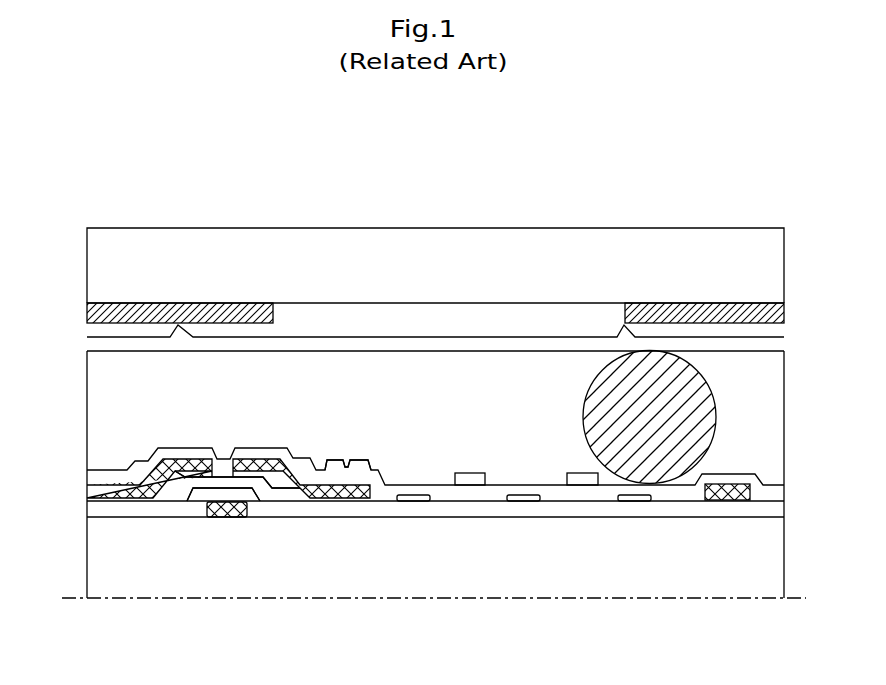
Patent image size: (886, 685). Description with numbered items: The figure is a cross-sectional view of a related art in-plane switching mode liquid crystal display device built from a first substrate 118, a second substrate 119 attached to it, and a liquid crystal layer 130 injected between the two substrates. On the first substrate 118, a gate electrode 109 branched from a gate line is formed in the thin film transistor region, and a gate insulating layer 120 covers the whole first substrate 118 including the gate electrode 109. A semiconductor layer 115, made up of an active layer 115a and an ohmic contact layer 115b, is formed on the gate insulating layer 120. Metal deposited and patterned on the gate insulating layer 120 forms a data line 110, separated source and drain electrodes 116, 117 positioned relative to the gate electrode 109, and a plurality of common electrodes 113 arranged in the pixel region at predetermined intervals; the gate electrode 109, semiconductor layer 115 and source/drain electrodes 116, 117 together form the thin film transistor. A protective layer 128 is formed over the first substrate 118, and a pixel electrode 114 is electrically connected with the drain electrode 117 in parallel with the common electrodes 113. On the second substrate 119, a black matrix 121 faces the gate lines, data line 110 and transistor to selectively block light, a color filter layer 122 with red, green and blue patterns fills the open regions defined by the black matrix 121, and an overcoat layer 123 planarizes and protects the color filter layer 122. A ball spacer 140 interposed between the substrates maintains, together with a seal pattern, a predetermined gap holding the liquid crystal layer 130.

The gate electrode 109 is at (232, 521).
The data line 110 is at (728, 502).
The common electrode 113 is at (640, 502).
The pixel electrode 114 is at (348, 462).
The semiconductor layer 115 is at (38, 485).
The active layer 115a is at (165, 497).
The ohmic contact layer 115b is at (92, 485).
The source electrode 116 is at (180, 463).
The drain electrode 117 is at (310, 490).
The first substrate 118 is at (777, 553).
The second substrate 119 is at (100, 265).
The gate insulating layer 120 is at (784, 510).
The black matrix 121 is at (85, 315).
The color filter layer 122 is at (455, 330).
The overcoat layer 123 is at (85, 345).
The protective layer 128 is at (778, 492).
The liquid crystal layer 130 is at (777, 385).
The ball spacer 140 is at (583, 397).